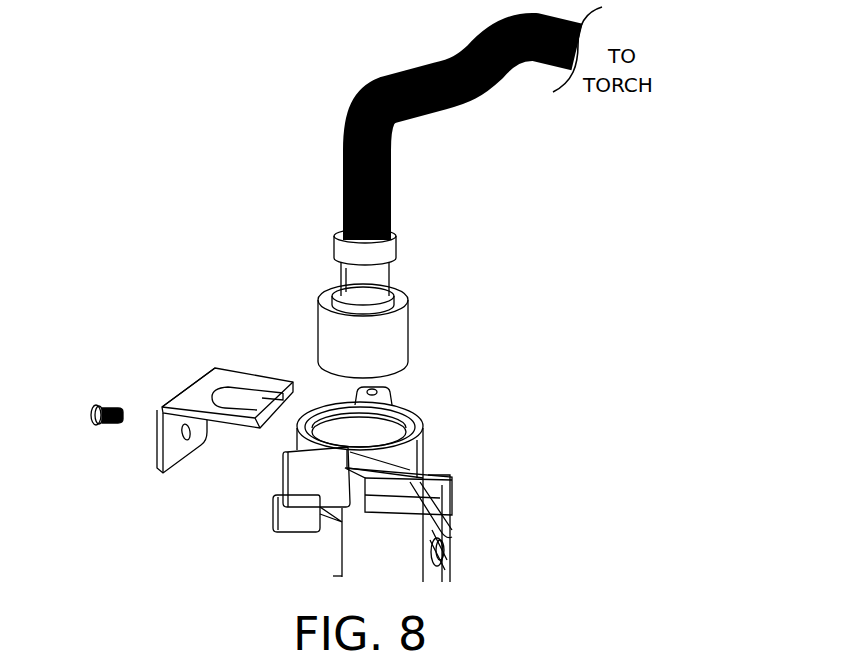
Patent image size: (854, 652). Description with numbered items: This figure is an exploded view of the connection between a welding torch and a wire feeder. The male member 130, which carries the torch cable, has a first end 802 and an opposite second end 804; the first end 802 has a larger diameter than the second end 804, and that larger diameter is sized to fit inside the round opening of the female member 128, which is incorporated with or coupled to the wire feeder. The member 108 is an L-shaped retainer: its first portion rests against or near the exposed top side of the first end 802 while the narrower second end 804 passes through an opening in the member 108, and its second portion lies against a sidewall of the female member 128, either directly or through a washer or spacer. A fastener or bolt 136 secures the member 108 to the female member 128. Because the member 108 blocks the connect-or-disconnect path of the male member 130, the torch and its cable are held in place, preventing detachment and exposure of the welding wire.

The male member 130 is at (408, 288).
The second end 804 is at (340, 233).
The first end 802 is at (318, 357).
The female member 128 is at (437, 425).
The member 108 is at (200, 370).
The fastener or bolt 136 is at (122, 400).